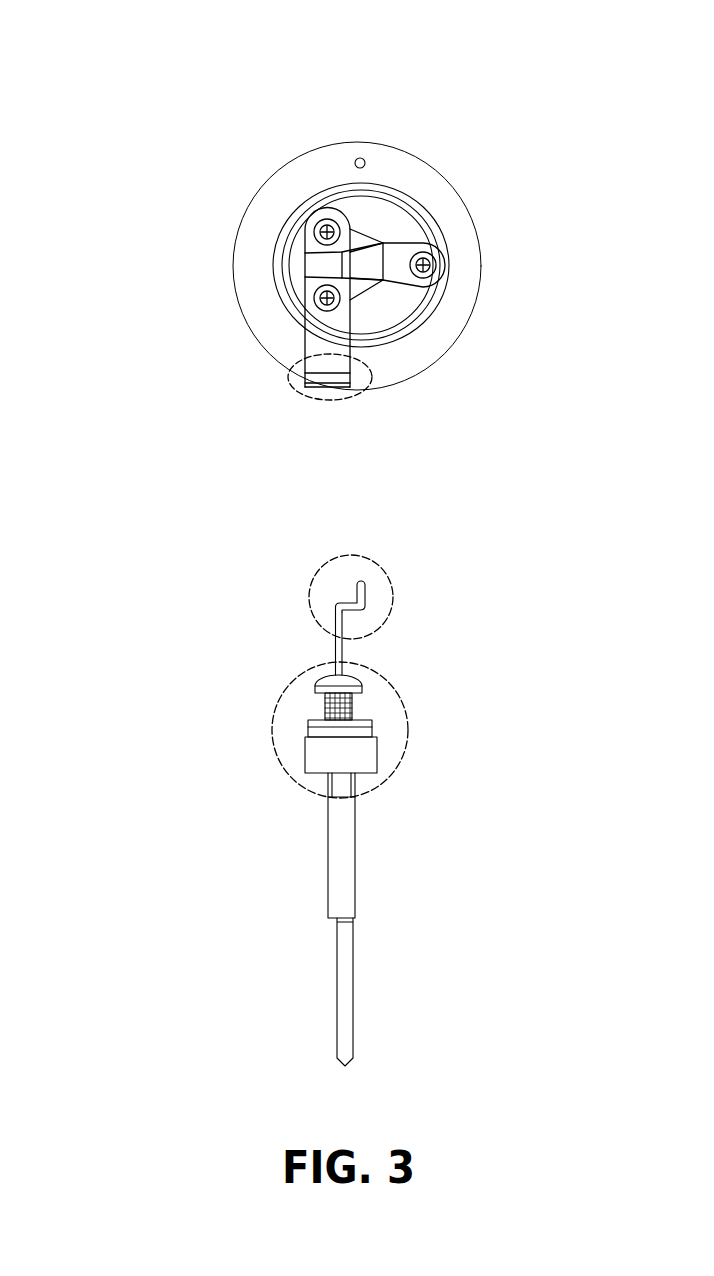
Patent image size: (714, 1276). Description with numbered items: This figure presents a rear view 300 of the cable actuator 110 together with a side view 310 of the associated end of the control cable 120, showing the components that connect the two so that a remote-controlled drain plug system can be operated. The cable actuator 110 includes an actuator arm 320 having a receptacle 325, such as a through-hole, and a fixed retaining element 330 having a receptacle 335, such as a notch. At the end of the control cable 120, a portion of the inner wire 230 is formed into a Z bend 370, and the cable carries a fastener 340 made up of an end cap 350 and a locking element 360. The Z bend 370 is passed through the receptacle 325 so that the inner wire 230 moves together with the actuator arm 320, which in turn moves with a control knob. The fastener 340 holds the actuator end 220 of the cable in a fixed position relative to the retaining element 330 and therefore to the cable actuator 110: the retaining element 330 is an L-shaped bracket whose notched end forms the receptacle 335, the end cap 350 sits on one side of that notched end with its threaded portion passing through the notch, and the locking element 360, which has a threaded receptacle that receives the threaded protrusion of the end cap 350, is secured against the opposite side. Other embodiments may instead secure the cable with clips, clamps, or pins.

The rear view 300 is at (75, 76).
The side view 310 is at (75, 576).
The cable actuator 110 is at (233, 283).
The receptacle 325 is at (317, 263).
The actuator arm 320 is at (390, 245).
The retaining element 330 is at (303, 353).
The receptacle 335 is at (330, 400).
The Z bend 370 is at (383, 573).
The inner wire 230 is at (335, 648).
The fastener 340 is at (284, 694).
The end cap 350 is at (362, 680).
The locking element 360 is at (372, 720).
The actuator end 220 is at (328, 888).
The control cable 120 is at (337, 997).